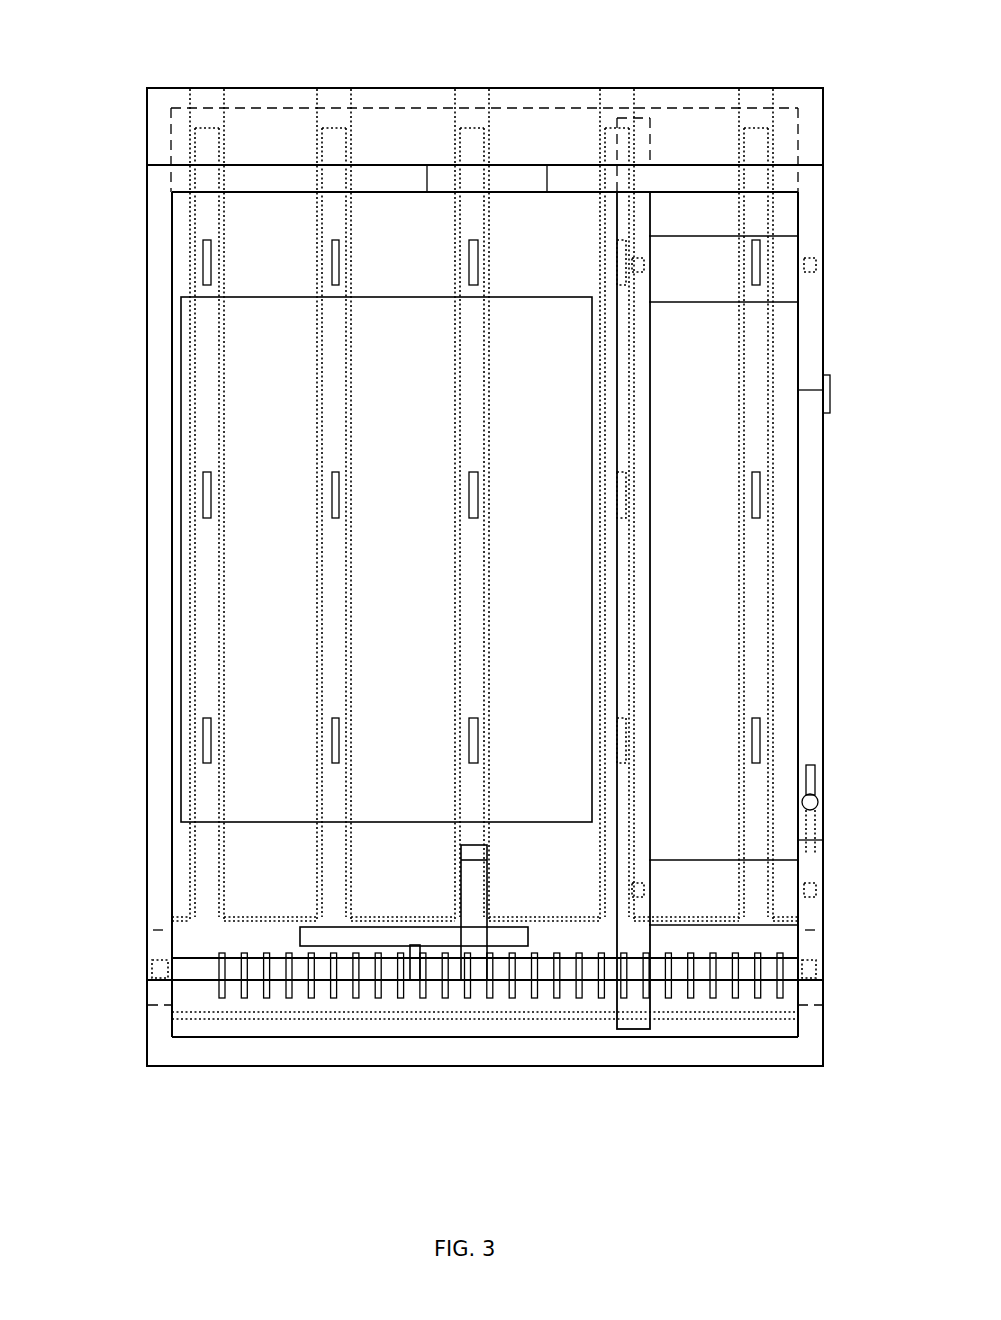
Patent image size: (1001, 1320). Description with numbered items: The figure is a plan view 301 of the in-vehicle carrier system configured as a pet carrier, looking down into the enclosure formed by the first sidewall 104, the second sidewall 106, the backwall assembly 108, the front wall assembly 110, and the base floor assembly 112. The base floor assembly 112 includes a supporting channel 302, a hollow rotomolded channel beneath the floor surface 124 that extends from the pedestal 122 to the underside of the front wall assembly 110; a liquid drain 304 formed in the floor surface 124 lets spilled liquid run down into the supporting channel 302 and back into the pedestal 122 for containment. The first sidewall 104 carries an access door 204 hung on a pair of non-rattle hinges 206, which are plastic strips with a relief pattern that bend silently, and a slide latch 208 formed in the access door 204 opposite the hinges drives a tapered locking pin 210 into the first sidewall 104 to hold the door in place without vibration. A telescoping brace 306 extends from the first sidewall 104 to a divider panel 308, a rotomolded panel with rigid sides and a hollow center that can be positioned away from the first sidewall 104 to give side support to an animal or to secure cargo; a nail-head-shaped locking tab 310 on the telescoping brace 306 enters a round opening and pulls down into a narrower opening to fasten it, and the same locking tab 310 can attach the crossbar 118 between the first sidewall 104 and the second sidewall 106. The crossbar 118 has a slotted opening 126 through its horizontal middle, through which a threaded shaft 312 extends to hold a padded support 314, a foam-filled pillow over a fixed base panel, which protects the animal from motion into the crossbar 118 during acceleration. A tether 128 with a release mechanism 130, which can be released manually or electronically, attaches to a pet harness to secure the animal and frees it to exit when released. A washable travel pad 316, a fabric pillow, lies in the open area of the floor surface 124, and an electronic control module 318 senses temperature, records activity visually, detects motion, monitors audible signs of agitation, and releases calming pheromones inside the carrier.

The plan view 301 is at (160, 45).
The first sidewall 104 is at (808, 328).
The second sidewall 106 is at (158, 540).
The backwall assembly 108 is at (605, 1050).
The front wall assembly 110 is at (535, 130).
The base floor assembly 112 is at (386, 530).
The crossbar 118 is at (722, 975).
The pedestal 122 is at (205, 937).
The floor surface 124 is at (283, 230).
The slotted opening 126 is at (330, 972).
The tether 128 is at (473, 916).
The release mechanism 130 is at (477, 850).
The access door 204 is at (808, 623).
The non-rattle hinge 206 is at (828, 408).
The slide latch 208 is at (808, 782).
The locking pin 210 is at (820, 832).
The supporting channel 302 is at (207, 392).
The liquid drain 304 is at (207, 262).
The telescoping brace 306 is at (786, 245).
The divider panel 308 is at (627, 587).
The locking tab 310 is at (820, 975).
The threaded shaft 312 is at (415, 990).
The padded support 314 is at (317, 936).
The washable travel pad 316 is at (277, 563).
The electronic control module 318 is at (443, 180).